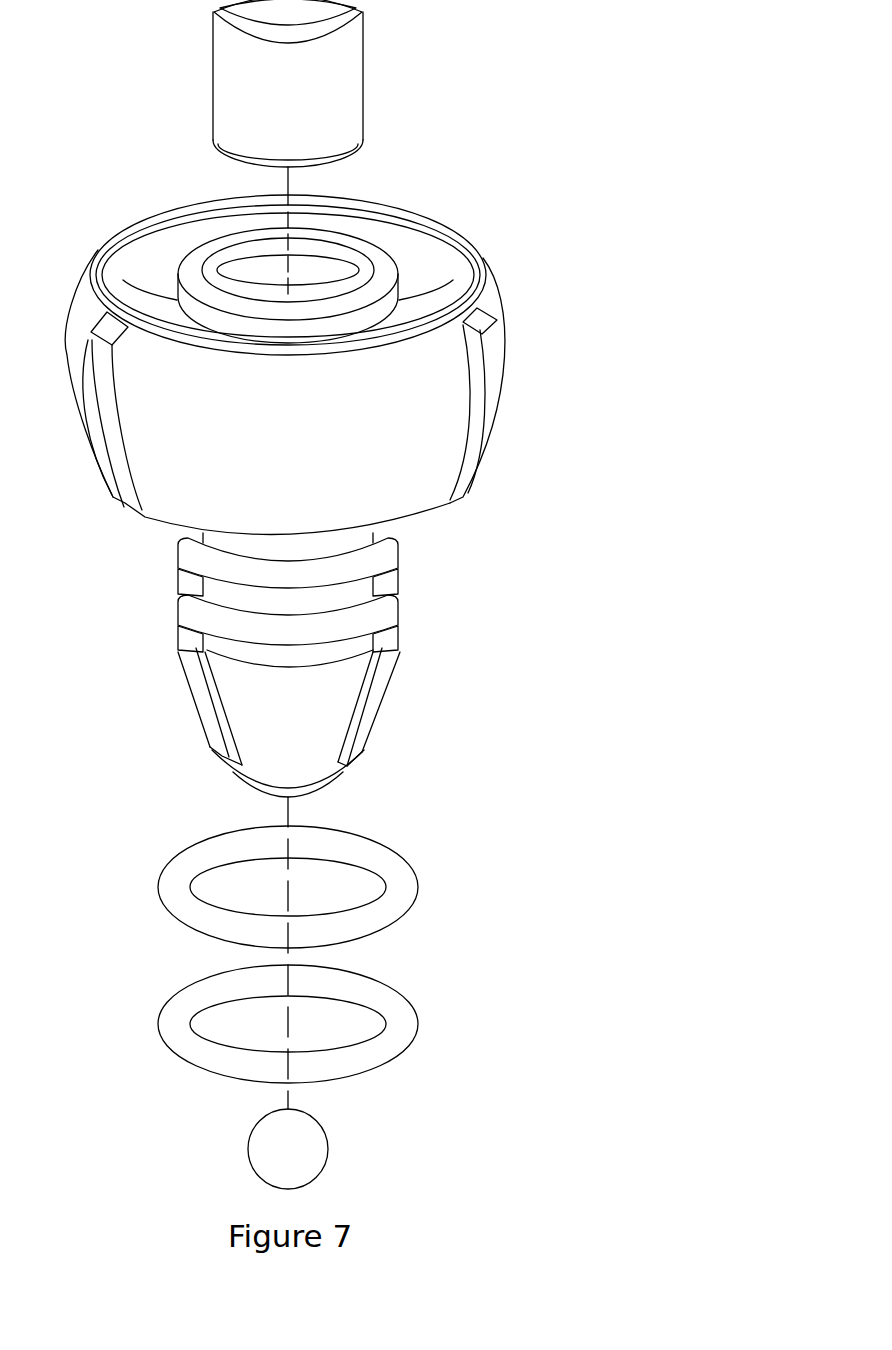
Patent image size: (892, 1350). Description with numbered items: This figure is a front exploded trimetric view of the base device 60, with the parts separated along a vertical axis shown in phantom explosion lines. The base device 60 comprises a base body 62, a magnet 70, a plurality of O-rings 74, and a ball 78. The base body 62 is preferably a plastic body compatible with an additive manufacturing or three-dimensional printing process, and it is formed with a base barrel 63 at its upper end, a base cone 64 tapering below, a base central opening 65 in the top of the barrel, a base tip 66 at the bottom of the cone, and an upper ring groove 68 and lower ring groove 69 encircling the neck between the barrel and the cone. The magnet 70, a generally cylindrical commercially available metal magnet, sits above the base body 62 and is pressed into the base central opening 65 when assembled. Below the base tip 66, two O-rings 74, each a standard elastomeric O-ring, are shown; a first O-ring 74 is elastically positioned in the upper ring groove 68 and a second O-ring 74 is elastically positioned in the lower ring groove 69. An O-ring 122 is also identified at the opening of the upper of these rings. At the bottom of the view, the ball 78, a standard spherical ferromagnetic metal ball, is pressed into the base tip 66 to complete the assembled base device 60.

The base device 60 is at (337, 504).
The base body 62 is at (277, 592).
The base barrel 63 is at (509, 444).
The base cone 64 is at (182, 701).
The base central opening 65 is at (322, 273).
The base tip 66 is at (333, 802).
The upper ring groove 68 is at (418, 555).
The lower ring groove 69 is at (418, 615).
The magnet 70 is at (379, 58).
The O-ring 74 is at (430, 907).
The ball 78 is at (234, 1140).
The O-ring 122 is at (276, 903).